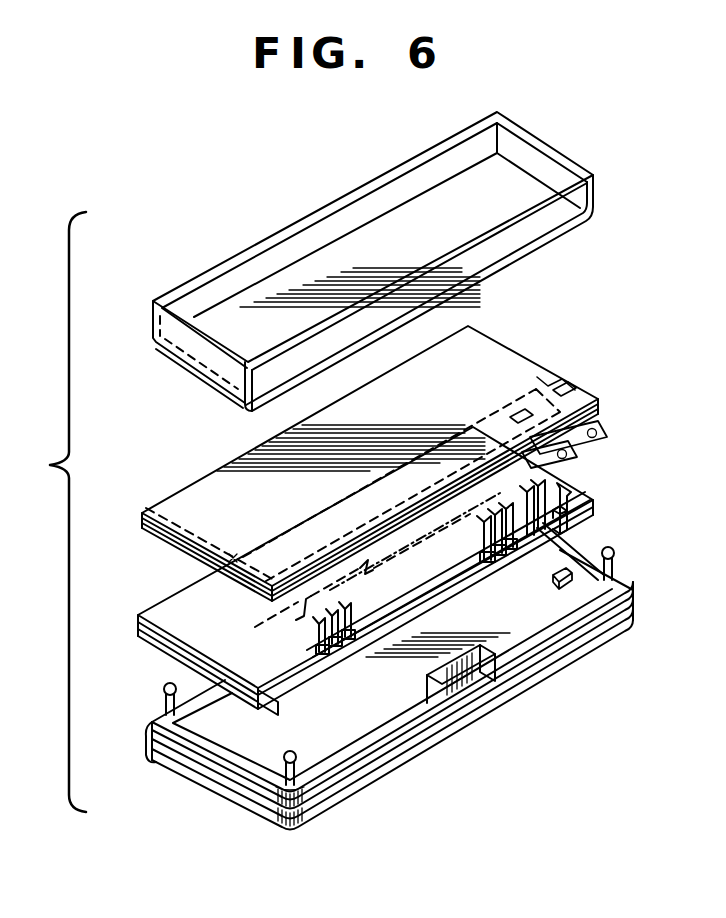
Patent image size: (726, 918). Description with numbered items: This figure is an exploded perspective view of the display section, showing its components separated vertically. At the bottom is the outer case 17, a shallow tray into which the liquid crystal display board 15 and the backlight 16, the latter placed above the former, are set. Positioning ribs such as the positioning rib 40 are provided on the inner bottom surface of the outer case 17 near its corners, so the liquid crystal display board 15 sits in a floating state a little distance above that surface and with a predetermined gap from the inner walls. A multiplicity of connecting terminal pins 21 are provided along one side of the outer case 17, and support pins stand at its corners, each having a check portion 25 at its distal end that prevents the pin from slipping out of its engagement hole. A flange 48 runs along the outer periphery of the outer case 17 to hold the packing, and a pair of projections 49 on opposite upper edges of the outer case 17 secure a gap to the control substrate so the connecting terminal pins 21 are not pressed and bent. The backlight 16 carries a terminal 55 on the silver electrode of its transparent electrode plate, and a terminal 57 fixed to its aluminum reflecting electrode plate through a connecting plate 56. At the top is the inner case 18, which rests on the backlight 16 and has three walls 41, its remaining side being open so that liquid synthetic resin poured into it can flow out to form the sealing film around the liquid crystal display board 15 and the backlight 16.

The wall 41 is at (389, 196).
The inner case 18 is at (237, 307).
The backlight 16 is at (495, 363).
The connecting plate 56 is at (540, 388).
The terminal 57 is at (590, 420).
The terminal 55 is at (578, 458).
The liquid crystal display board 15 is at (178, 602).
The connecting terminal pins 21 is at (588, 483).
The positioning rib 40 is at (557, 577).
The outer case 17 is at (387, 697).
The flange 48 is at (150, 752).
The check portion 25 is at (282, 742).
The projection 49 is at (468, 680).